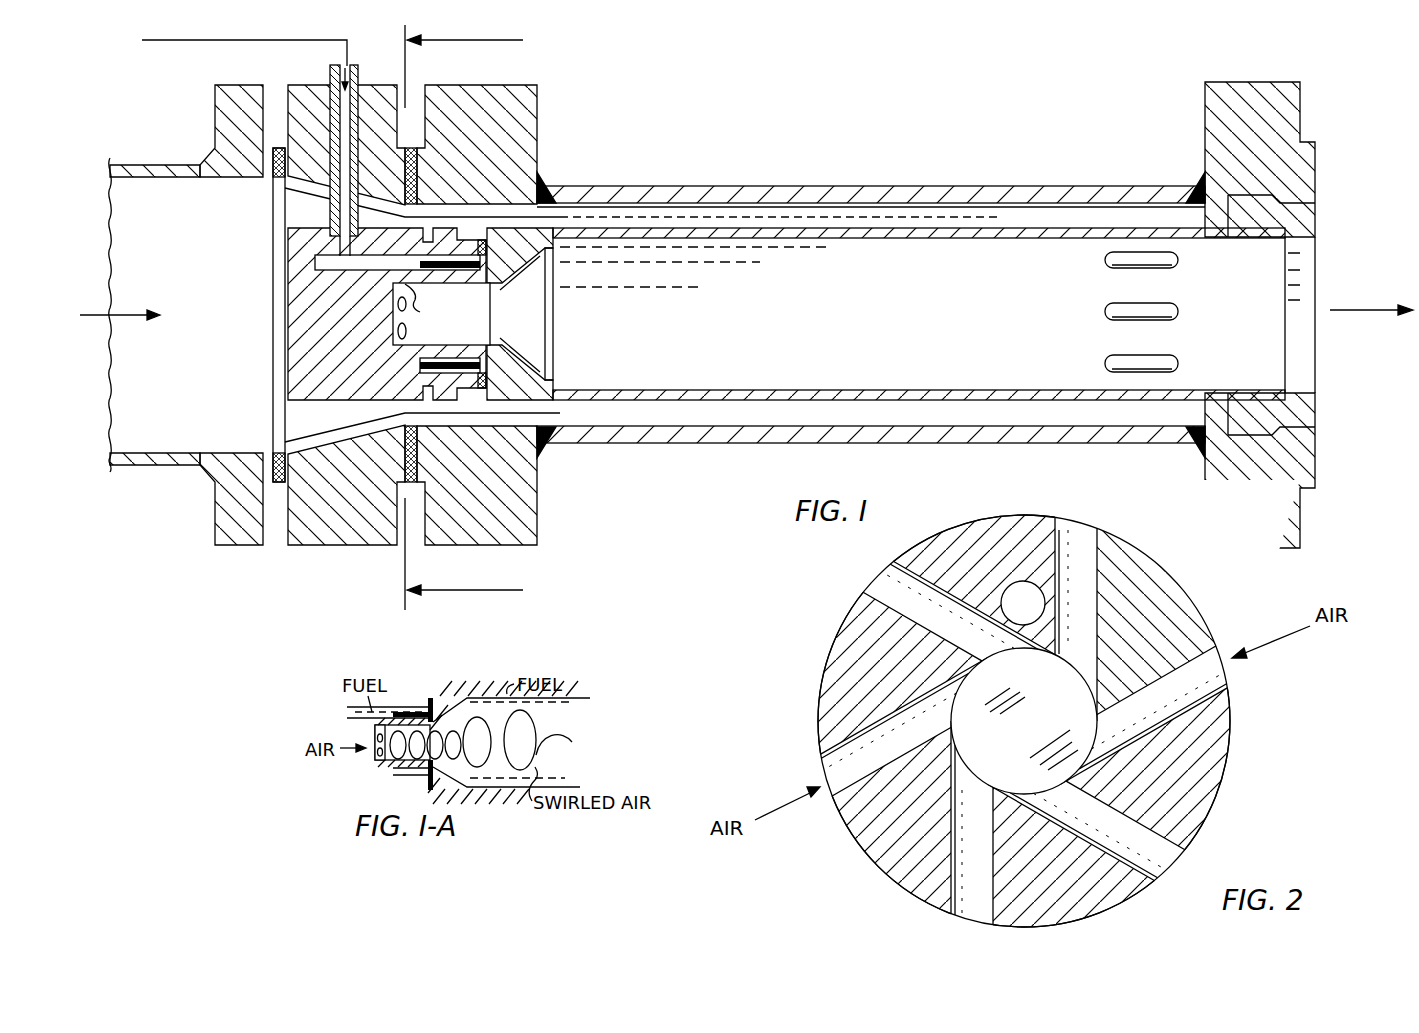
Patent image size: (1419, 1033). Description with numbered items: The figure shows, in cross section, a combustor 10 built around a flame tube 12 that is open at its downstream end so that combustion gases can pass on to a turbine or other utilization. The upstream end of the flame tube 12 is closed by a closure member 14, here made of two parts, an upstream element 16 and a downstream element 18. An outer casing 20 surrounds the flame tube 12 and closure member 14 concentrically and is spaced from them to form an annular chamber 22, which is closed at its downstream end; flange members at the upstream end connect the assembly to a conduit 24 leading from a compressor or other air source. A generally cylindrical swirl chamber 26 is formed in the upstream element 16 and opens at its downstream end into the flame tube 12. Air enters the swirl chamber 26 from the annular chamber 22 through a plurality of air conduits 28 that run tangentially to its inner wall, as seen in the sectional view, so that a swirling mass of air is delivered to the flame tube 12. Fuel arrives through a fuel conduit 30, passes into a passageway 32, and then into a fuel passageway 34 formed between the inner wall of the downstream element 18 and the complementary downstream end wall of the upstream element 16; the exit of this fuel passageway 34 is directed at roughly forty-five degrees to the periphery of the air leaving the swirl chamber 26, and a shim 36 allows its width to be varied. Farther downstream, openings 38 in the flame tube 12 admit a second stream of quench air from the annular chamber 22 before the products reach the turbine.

In FIG. 1, the combustor 10 is at (896, 165).
In FIG. 1, the flame tube 12 is at (813, 390).
In FIG. 1, the closure member 14 is at (260, 295).
In FIG. 1, the upstream element 16 is at (352, 340).
In FIG. 2, the upstream element 16 is at (1198, 630).
In FIG. 1, the downstream element 18 is at (503, 370).
In FIG. 1, the outer casing 20 is at (812, 186).
In FIG. 1, the annular chamber 22 is at (888, 424).
In FIG. 1, the conduit 24 is at (160, 165).
In FIG. 1, the swirl chamber 26 is at (474, 327).
In FIG. 1, the air conduits 28 is at (470, 293).
In FIG. 2, the air conduits 28 is at (880, 590).
In FIG. 1, the fuel conduit 30 is at (358, 78).
In FIG. 1, the passageway 32 is at (348, 263).
In FIG. 2, the passageway 32 is at (1006, 630).
In FIG. 1, the fuel passageway 34 is at (502, 290).
In FIG. 1, the shim 36 is at (482, 390).
In FIG. 1, the openings 38 is at (1105, 310).